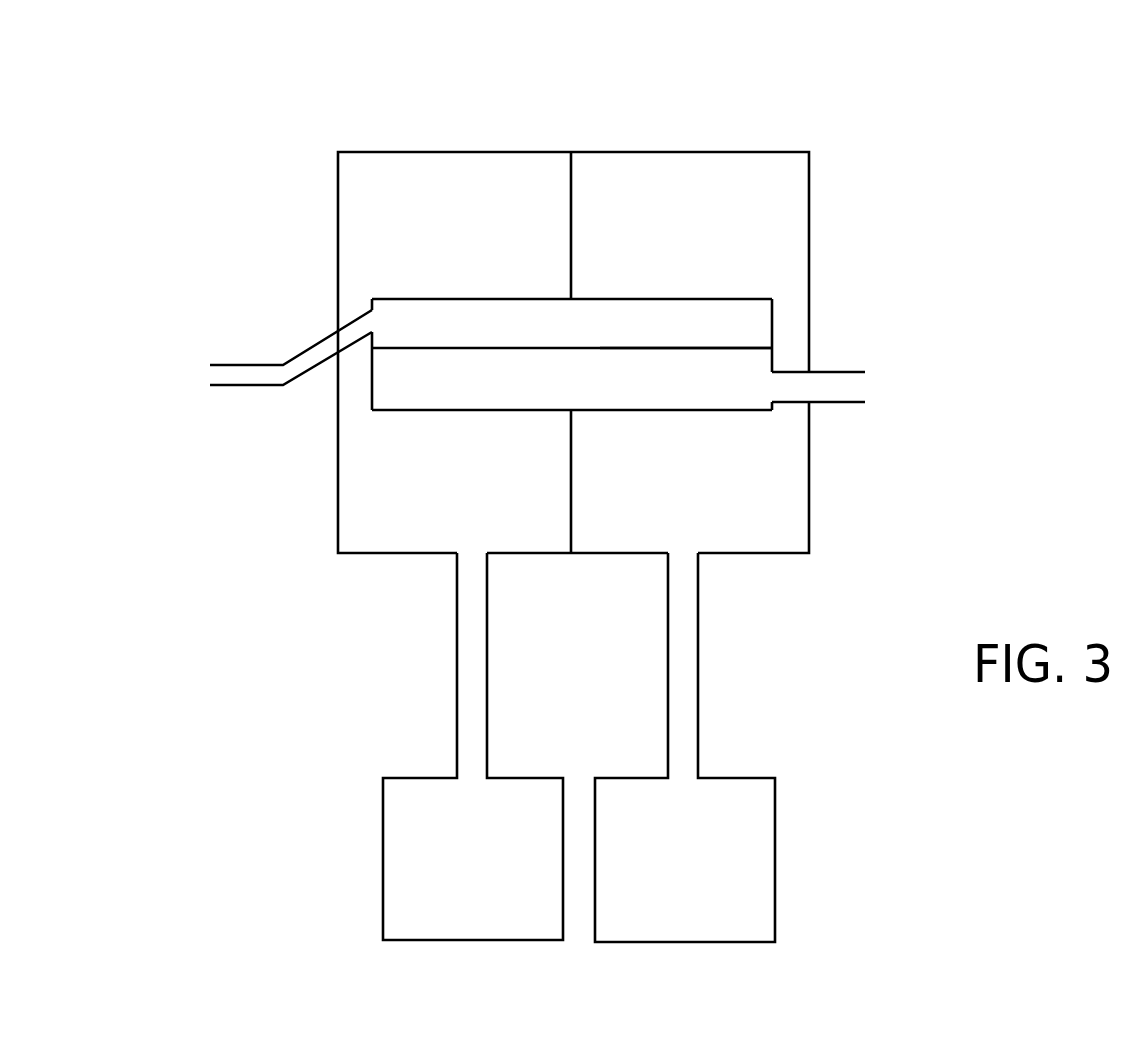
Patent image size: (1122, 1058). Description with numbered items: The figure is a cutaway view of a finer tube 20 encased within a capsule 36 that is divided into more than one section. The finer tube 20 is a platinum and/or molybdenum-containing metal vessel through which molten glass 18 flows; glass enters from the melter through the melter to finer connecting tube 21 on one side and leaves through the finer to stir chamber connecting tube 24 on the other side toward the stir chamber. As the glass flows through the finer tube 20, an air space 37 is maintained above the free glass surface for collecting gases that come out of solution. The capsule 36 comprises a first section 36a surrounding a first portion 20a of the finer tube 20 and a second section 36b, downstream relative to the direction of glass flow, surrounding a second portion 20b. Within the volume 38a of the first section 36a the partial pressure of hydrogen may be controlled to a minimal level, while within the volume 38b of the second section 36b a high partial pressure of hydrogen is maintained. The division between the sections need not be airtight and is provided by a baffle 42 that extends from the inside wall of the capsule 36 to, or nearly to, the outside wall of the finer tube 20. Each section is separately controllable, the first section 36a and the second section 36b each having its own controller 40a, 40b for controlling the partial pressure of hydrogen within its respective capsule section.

The capsule 36 is at (570, 295).
The first section 36a is at (388, 150).
The second section 36b is at (713, 150).
The volume 38a is at (467, 265).
The volume 38b is at (656, 266).
The finer tube 20 is at (572, 297).
The air space 37 is at (543, 338).
The molten glass 18 is at (723, 348).
The first portion 20a is at (408, 410).
The second portion 20b is at (660, 410).
The melter to finer connecting tube 21 is at (240, 387).
The finer to stir chamber connecting tube 24 is at (838, 402).
The baffle 42 is at (569, 487).
The controller 40a is at (382, 848).
The controller 40b is at (777, 848).